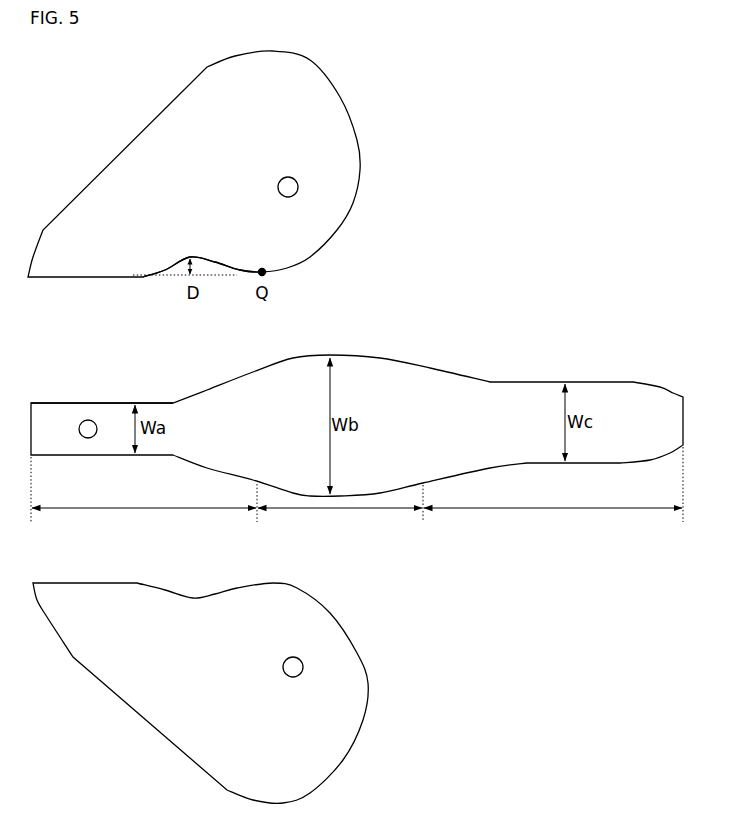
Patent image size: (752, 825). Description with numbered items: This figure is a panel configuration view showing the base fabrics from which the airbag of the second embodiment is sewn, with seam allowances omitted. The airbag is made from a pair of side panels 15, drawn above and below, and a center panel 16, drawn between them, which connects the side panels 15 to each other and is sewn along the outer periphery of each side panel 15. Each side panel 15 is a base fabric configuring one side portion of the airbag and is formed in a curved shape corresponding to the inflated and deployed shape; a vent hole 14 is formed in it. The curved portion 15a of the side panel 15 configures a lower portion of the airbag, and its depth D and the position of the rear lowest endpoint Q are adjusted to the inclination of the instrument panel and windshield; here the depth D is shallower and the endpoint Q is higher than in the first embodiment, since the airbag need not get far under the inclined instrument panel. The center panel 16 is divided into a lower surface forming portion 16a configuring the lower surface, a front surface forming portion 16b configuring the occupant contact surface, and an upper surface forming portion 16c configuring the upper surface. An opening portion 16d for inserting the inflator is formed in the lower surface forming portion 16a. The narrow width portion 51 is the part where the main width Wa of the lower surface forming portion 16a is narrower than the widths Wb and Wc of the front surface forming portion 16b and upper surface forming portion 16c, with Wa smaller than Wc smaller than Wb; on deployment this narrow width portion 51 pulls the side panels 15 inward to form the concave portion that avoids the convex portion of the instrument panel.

The vent hole 14 is at (285, 177).
The side panel 15 is at (205, 178).
The curved portion 15a is at (162, 252).
The center panel 16 is at (447, 429).
The lower surface forming portion 16a is at (144, 521).
The front surface forming portion 16b is at (340, 521).
The upper surface forming portion 16c is at (553, 520).
The opening portion 16d is at (84, 418).
The narrow width portion 51 is at (113, 402).